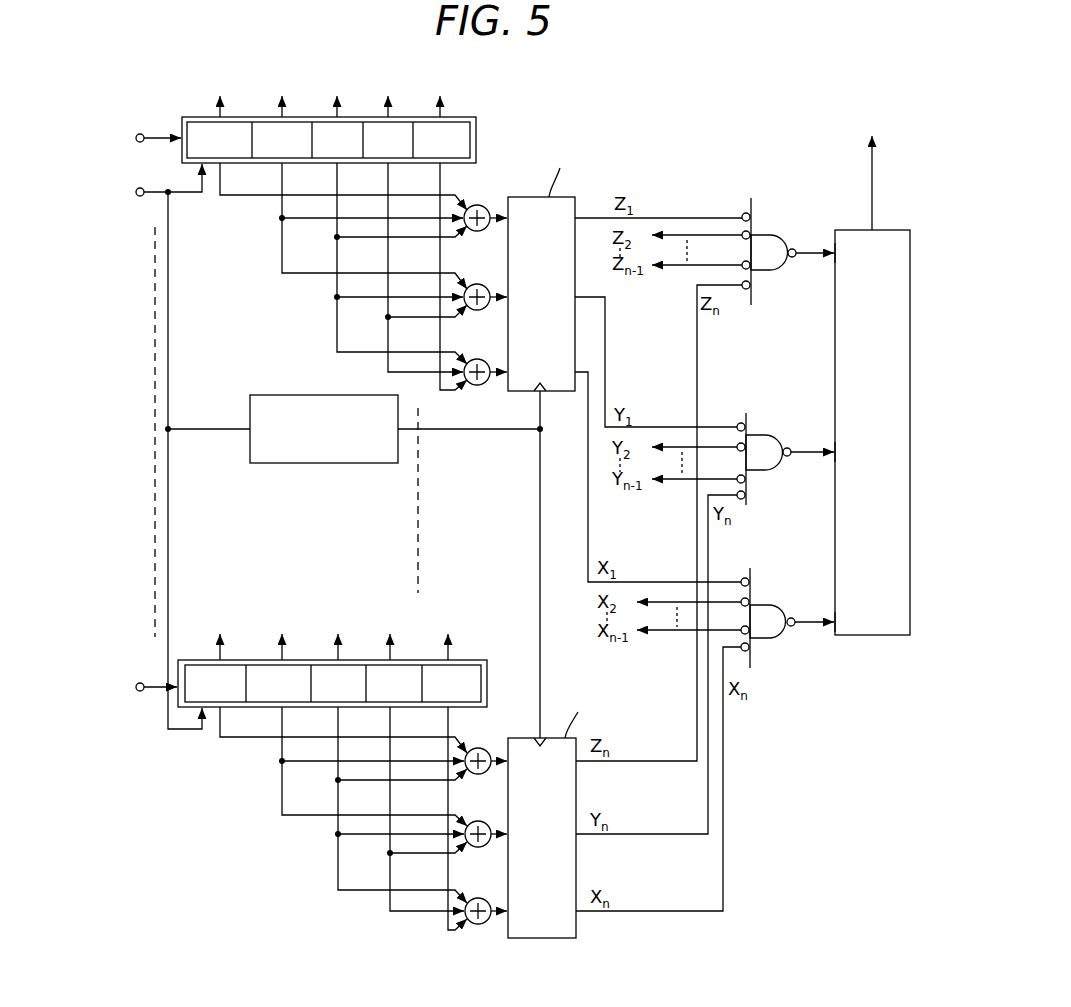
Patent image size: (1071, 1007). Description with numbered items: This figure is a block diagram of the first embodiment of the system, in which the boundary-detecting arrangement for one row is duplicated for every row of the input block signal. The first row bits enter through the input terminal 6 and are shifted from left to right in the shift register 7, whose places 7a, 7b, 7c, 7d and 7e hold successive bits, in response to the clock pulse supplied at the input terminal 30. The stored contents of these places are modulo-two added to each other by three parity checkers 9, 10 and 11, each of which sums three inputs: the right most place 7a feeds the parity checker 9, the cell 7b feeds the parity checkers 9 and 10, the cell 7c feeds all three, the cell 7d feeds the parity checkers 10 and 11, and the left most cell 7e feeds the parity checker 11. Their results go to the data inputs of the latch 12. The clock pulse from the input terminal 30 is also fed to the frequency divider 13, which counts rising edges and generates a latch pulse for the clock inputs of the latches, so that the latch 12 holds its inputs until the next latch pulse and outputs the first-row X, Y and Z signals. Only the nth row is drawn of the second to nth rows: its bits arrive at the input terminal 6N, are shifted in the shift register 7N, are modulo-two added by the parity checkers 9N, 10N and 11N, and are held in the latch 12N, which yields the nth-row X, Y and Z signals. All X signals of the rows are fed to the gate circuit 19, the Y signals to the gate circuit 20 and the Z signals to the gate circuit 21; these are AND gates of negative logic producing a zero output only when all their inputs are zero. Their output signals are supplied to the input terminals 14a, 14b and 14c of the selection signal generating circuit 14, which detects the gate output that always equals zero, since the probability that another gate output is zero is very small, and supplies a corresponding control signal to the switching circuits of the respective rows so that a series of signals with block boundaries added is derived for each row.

The input terminal 6 is at (141, 134).
The shift register 7 is at (477, 117).
The right most place 7a is at (458, 118).
The cell 7b is at (398, 118).
The cell 7c is at (350, 118).
The cell 7d is at (296, 118).
The left most cell 7e is at (234, 118).
The input terminal 30 is at (142, 189).
The parity checker 9 is at (484, 360).
The parity checker 10 is at (484, 285).
The parity checker 11 is at (484, 206).
The latch 12 is at (548, 272).
The frequency divider 13 is at (302, 395).
The selection signal generating circuit 14 is at (876, 230).
The input terminal 14a is at (855, 622).
The input terminal 14b is at (855, 452).
The input terminal 14c is at (854, 252).
The gate circuit 19 is at (776, 605).
The gate circuit 20 is at (772, 435).
The gate circuit 21 is at (770, 234).
The input terminal 6N is at (140, 692).
The shift register 7N is at (474, 660).
The parity checker 9N is at (485, 898).
The parity checker 10N is at (485, 822).
The parity checker 11N is at (485, 749).
The latch 12N is at (560, 809).